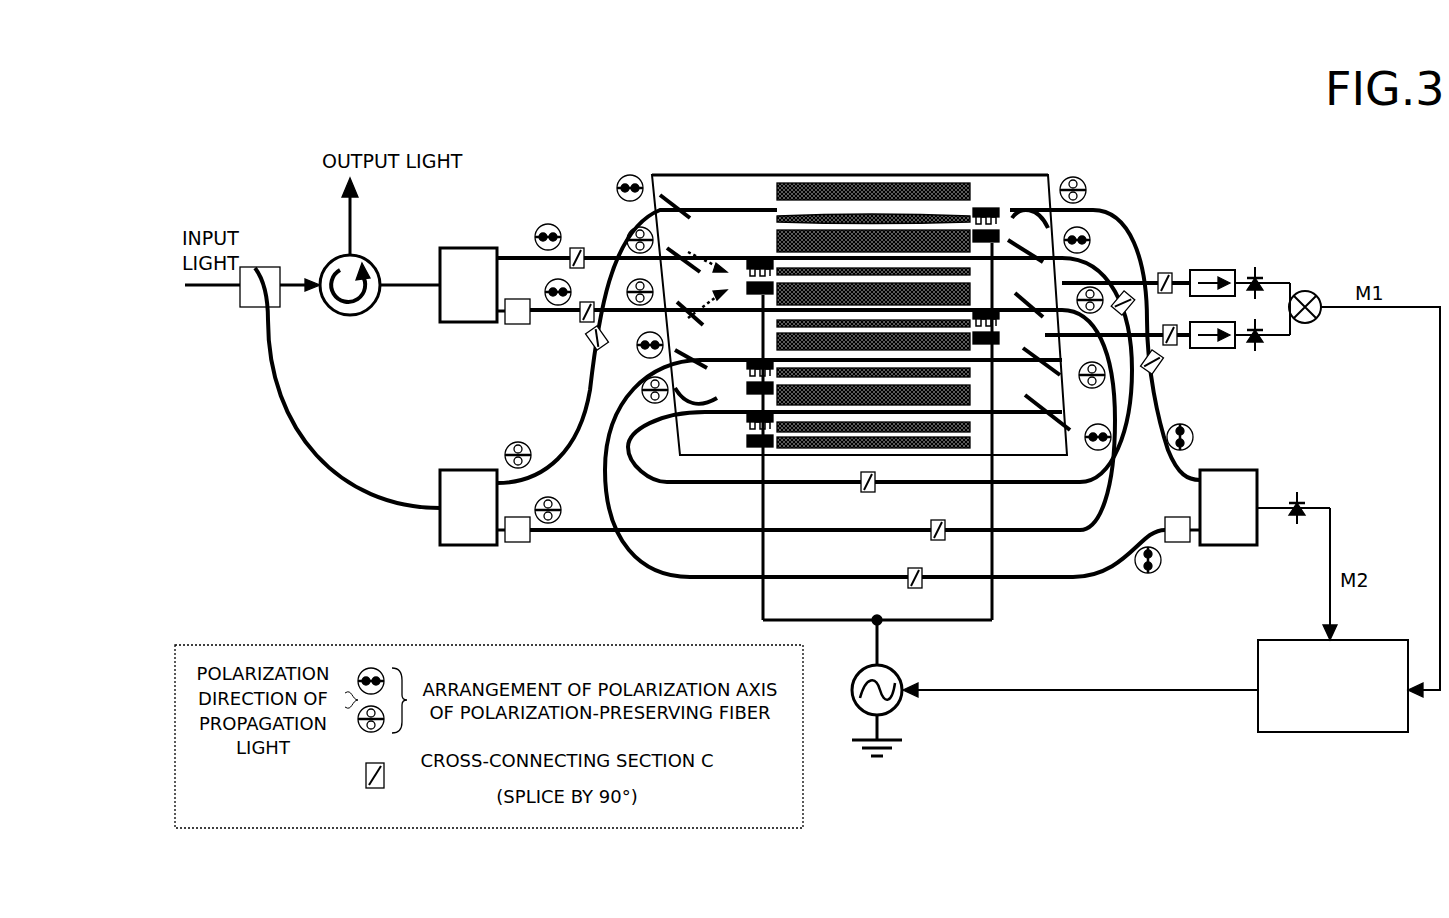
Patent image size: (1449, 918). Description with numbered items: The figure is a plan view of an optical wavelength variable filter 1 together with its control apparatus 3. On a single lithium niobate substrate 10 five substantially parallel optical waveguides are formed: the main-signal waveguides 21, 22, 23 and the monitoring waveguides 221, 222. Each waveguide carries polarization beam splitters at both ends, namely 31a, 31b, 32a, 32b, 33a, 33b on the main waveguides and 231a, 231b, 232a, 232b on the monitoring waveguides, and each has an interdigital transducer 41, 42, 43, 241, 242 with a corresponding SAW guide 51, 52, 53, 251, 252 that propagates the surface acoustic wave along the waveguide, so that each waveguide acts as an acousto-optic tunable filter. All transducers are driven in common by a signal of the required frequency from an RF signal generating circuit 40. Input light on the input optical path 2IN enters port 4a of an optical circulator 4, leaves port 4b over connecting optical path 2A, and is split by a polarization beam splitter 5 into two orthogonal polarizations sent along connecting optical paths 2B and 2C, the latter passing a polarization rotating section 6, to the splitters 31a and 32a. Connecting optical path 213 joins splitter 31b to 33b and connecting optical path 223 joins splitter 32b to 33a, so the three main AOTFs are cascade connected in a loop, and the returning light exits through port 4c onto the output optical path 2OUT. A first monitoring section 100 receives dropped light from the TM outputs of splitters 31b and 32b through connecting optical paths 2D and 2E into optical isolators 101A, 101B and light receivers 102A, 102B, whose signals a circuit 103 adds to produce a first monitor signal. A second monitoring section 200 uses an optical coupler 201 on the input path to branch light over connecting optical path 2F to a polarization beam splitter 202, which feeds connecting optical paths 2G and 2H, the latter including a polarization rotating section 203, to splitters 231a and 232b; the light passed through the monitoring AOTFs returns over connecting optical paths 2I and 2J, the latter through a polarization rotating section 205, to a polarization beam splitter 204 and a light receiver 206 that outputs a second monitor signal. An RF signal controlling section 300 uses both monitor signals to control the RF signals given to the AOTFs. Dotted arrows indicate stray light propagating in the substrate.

The optical wavelength variable filter 1 is at (597, 140).
The input optical path 2IN is at (232, 303).
The output optical path 2OUT is at (347, 243).
The connecting optical path 2A is at (398, 300).
The connecting optical path 2B is at (520, 250).
The connecting optical path 2C is at (560, 322).
The connecting optical path 2D is at (1170, 280).
The connecting optical path 2E is at (1156, 335).
The connecting optical path 2F is at (312, 452).
The connecting optical path 2G is at (565, 462).
The connecting optical path 2H is at (595, 533).
The connecting optical path 2I is at (1100, 212).
The connecting optical path 2J is at (688, 578).
The connecting optical path 213 is at (1135, 240).
The connecting optical path 223 is at (1075, 485).
The control apparatus 3 is at (1345, 778).
The optical circulator 4 is at (340, 312).
The port 4a is at (300, 294).
The port 4b is at (409, 271).
The port 4c is at (339, 216).
The polarization beam splitter 5 is at (465, 245).
The polarization rotating section 6 is at (515, 327).
The substrate 10 is at (1010, 177).
The optical waveguide 21 is at (735, 258).
The optical waveguide 22 is at (887, 232).
The optical waveguide 23 is at (940, 405).
The polarization beam splitter 31a is at (856, 249).
The polarization beam splitter 31b is at (1028, 244).
The polarization beam splitter 32a is at (856, 320).
The polarization beam splitter 32b is at (1034, 298).
The polarization beam splitter 33a is at (694, 369).
The polarization beam splitter 33b is at (1041, 353).
The interdigital transducer 41 is at (760, 258).
The interdigital transducer 42 is at (950, 285).
The interdigital transducer 43 is at (737, 445).
The SAW guide 51 is at (797, 240).
The SAW guide 52 is at (920, 268).
The SAW guide 53 is at (905, 378).
The RF signal generating circuit 40 is at (897, 705).
The first monitoring section 100 is at (1338, 190).
The optical isolator 101A is at (1200, 270).
The optical isolator 101B is at (1200, 348).
The light receiver 102A is at (1258, 270).
The light receiver 102B is at (1258, 350).
The circuit 103 is at (1318, 293).
The second monitoring section 200 is at (338, 542).
The optical coupler 201 is at (258, 312).
The polarization beam splitter 202 is at (440, 490).
The polarization rotating section 203 is at (517, 542).
The polarization beam splitter 204 is at (1240, 545).
The polarization rotating section 205 is at (1178, 542).
The light receiver 206 is at (1302, 495).
The optical waveguide 221 is at (835, 183).
The optical waveguide 222 is at (815, 432).
The polarization beam splitter 231a is at (684, 196).
The polarization beam splitter 231b is at (1029, 201).
The polarization beam splitter 232a is at (868, 412).
The polarization beam splitter 232b is at (1046, 401).
The interdigital transducer 241 is at (965, 320).
The interdigital transducer 242 is at (767, 440).
The SAW guide 251 is at (860, 215).
The SAW guide 252 is at (790, 440).
The RF signal controlling section 300 is at (1258, 700).